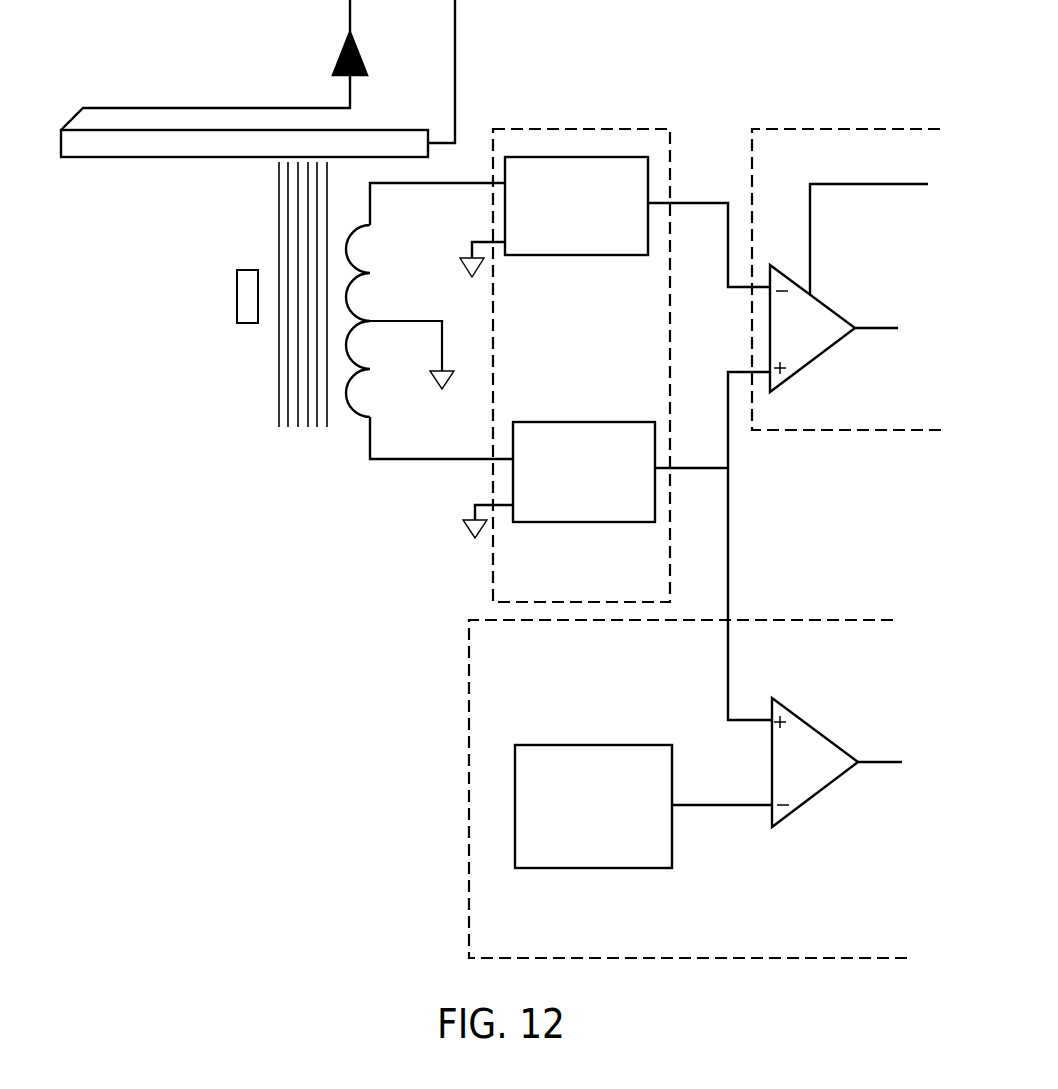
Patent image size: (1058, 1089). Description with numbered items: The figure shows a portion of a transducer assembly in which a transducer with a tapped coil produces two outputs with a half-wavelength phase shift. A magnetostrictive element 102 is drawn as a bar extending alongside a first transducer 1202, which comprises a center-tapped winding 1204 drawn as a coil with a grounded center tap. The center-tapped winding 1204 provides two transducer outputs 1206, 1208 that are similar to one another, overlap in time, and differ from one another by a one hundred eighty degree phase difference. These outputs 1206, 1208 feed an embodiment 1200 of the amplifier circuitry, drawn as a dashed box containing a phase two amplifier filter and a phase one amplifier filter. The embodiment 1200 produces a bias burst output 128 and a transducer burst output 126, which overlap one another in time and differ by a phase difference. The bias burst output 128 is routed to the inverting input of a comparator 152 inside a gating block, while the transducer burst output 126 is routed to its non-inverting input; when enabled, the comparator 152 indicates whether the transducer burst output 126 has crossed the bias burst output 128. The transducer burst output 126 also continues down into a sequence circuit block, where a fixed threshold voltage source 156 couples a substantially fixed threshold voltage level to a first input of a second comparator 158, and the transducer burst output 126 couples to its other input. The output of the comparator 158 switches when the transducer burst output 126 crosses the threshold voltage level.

The magnetostrictive element 102 is at (138, 160).
The first transducer 1202 is at (252, 380).
The center-tapped winding 1204 is at (348, 292).
The transducer output 1206 is at (467, 183).
The transducer output 1208 is at (428, 460).
The embodiment of the amplifier circuitry 1200 is at (596, 129).
The bias burst output 128 is at (687, 200).
The transducer burst output 126 is at (730, 492).
The comparator 152 is at (823, 300).
The fixed threshold voltage source 156 is at (597, 745).
The comparator 158 is at (800, 717).